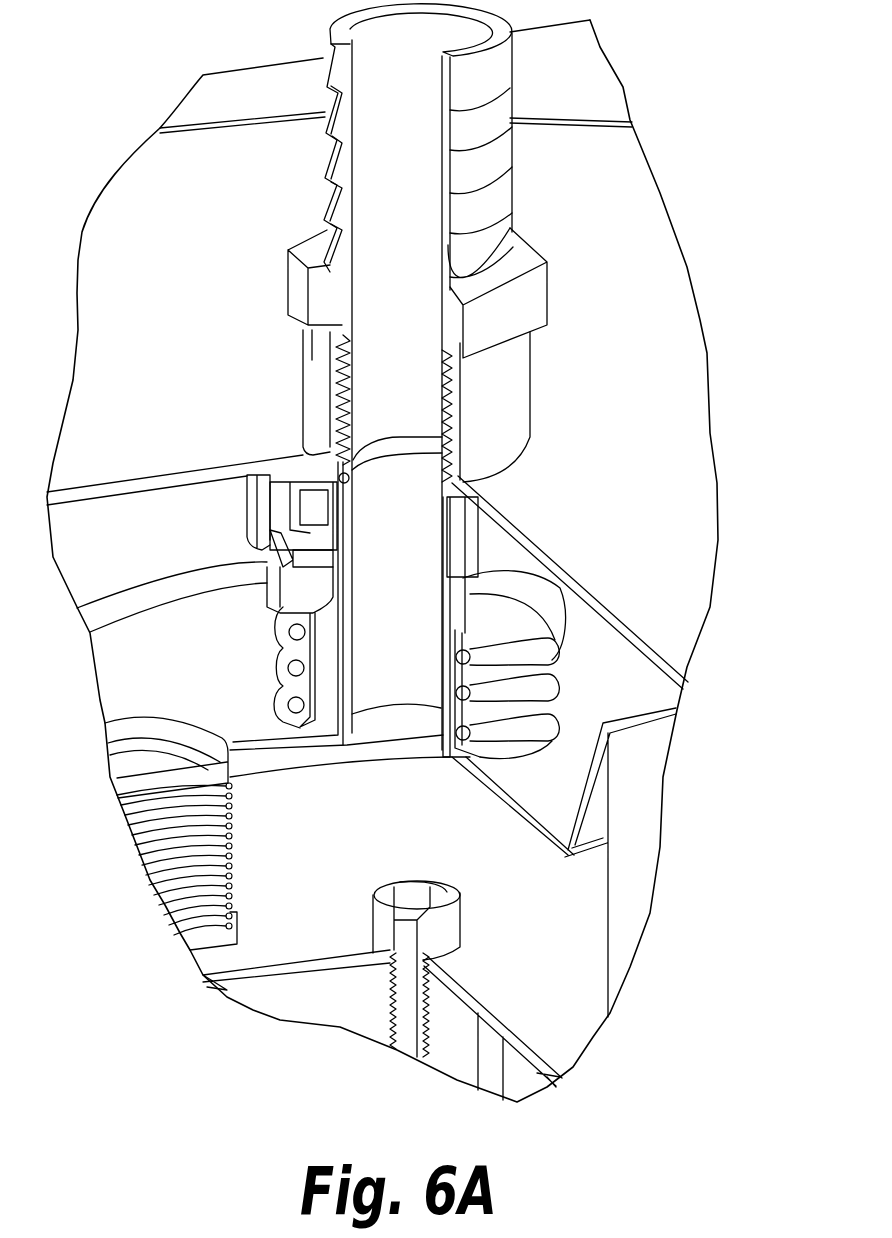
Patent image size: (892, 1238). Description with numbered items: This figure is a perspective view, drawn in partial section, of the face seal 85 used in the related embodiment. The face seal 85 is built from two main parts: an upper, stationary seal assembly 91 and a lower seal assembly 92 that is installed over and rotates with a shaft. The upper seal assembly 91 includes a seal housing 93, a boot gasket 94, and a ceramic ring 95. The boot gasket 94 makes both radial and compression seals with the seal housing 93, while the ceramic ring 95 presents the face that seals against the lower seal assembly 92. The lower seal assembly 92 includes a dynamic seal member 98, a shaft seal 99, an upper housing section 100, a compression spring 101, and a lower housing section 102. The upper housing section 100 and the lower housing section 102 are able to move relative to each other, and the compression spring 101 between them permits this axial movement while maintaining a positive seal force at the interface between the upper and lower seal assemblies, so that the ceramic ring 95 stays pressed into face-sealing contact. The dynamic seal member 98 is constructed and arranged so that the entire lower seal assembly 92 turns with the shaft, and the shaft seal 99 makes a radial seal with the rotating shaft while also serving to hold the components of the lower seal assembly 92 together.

The face seal 85 is at (633, 427).
The upper seal assembly 91 is at (247, 353).
The lower seal assembly 92 is at (597, 637).
The seal housing 93 is at (250, 495).
The boot gasket 94 is at (280, 505).
The ceramic ring 95 is at (254, 495).
The dynamic seal member 98 is at (313, 575).
The shaft seal 99 is at (332, 678).
The upper housing section 100 is at (523, 603).
The compression spring 101 is at (543, 660).
The lower housing section 102 is at (553, 707).